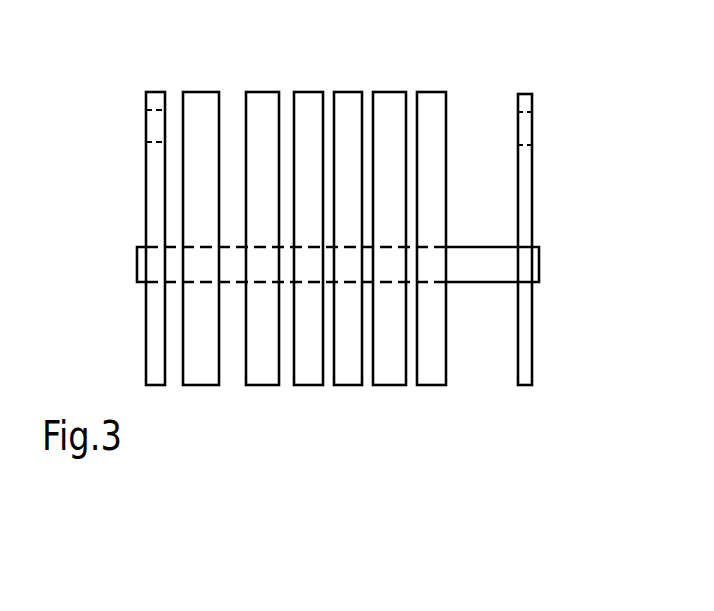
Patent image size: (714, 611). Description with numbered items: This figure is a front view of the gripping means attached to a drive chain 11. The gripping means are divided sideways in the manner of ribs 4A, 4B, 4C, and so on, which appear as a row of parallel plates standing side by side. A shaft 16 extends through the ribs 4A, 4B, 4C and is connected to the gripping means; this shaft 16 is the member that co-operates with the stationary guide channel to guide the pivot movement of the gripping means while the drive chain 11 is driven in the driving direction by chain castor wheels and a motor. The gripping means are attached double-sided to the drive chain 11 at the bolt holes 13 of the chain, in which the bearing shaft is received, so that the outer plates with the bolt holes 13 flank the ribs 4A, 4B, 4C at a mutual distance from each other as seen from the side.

The drive chain 11 is at (532, 330).
The bolt holes 13 is at (157, 134).
The shaft 16 is at (493, 262).
The rib 4A is at (440, 105).
The rib 4B is at (393, 100).
The rib 4C is at (352, 102).